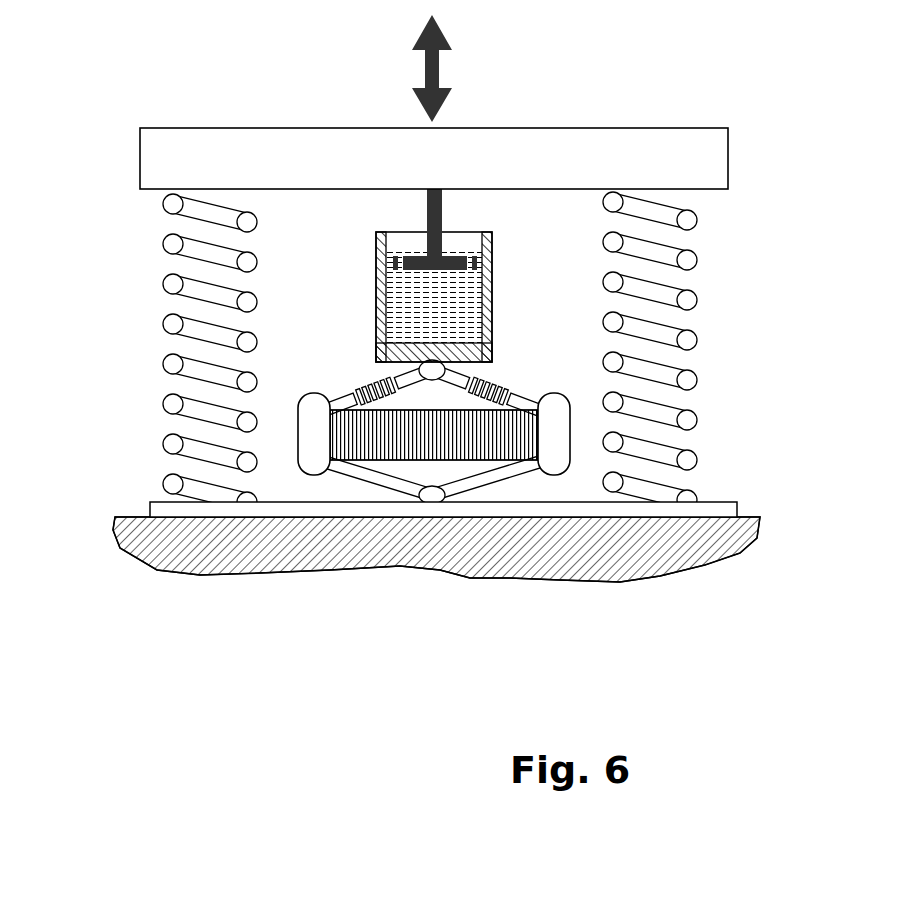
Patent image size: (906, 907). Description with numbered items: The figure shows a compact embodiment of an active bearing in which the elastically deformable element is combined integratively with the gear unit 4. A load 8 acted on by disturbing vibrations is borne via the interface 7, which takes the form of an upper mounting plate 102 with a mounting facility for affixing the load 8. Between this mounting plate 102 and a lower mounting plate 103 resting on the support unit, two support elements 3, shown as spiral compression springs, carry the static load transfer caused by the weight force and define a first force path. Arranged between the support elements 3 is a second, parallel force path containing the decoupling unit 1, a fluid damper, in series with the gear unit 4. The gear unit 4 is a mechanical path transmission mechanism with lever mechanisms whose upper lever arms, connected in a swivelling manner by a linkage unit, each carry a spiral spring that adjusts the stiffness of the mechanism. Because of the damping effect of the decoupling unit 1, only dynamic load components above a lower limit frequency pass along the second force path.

The decoupling unit 1 is at (378, 282).
The support elements 3 is at (165, 316).
The gear unit 4 is at (342, 490).
The interface 7 is at (439, 127).
The load 8 is at (444, 68).
The mounting plate 102 is at (673, 137).
The lower mounting plate 103 is at (148, 503).